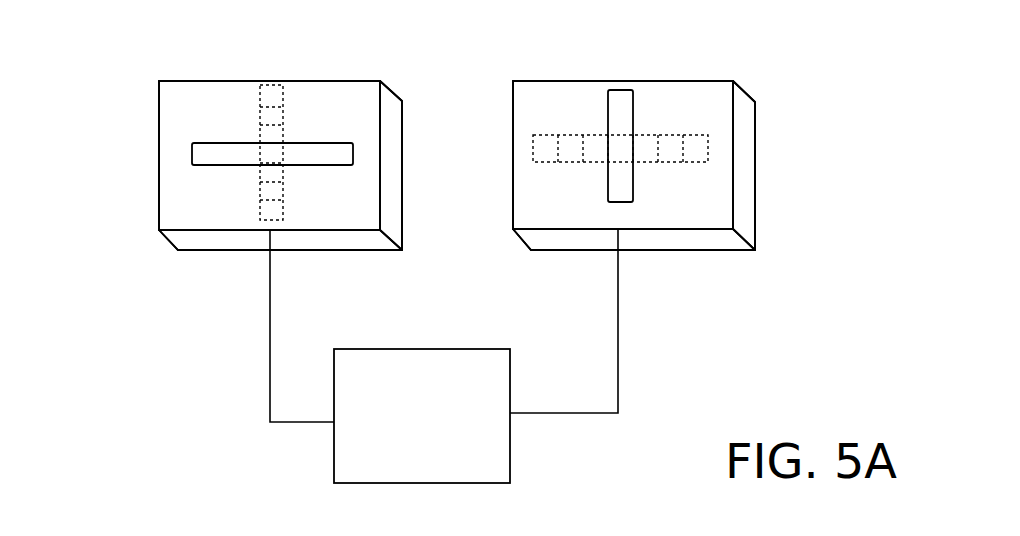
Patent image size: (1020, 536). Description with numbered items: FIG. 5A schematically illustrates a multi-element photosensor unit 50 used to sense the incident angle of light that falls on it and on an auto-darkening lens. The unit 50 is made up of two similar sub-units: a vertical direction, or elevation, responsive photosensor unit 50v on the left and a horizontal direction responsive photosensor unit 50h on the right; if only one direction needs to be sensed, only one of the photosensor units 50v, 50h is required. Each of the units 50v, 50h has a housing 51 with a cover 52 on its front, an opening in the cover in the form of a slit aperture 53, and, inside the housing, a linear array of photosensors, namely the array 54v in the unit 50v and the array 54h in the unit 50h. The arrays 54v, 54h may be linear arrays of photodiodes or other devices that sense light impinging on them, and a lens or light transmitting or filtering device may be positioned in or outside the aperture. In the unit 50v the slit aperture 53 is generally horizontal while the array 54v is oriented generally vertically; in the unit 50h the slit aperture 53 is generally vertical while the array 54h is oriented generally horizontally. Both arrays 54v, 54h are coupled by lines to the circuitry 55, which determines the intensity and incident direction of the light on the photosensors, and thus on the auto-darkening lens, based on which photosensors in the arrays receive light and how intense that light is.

The multi-element photosensor unit 50 is at (218, 19).
The vertical direction responsive photosensor unit 50v is at (159, 130).
The horizontal direction responsive photosensor unit 50h is at (521, 81).
The housing 51 is at (340, 81).
The cover 52 is at (355, 120).
The slit aperture 53 is at (368, 147).
The linear array of photosensors 54v is at (268, 87).
The linear array of photosensors 54h is at (693, 152).
The circuitry 55 is at (510, 447).